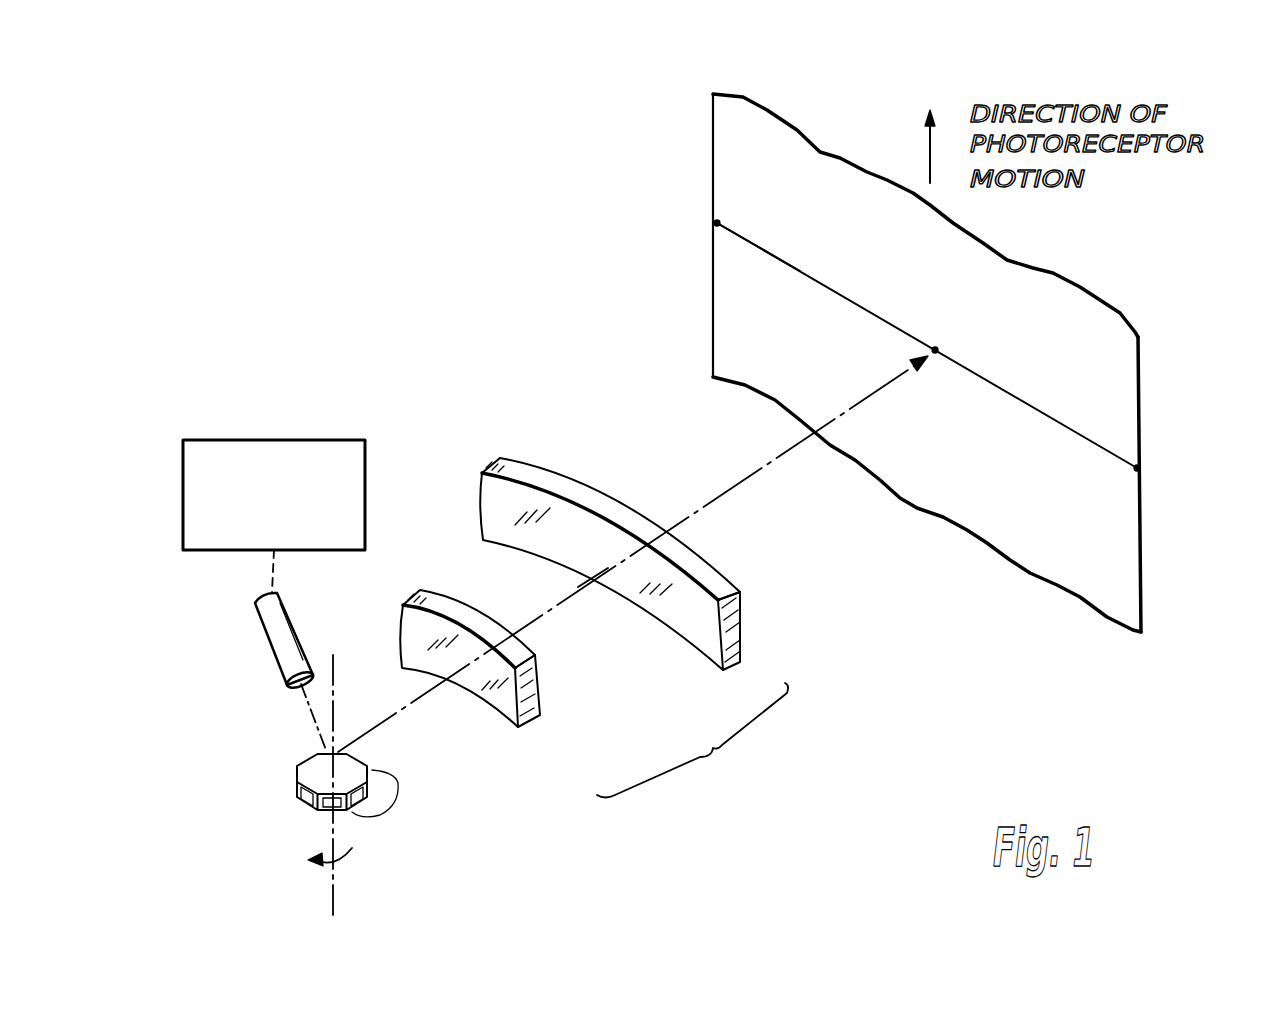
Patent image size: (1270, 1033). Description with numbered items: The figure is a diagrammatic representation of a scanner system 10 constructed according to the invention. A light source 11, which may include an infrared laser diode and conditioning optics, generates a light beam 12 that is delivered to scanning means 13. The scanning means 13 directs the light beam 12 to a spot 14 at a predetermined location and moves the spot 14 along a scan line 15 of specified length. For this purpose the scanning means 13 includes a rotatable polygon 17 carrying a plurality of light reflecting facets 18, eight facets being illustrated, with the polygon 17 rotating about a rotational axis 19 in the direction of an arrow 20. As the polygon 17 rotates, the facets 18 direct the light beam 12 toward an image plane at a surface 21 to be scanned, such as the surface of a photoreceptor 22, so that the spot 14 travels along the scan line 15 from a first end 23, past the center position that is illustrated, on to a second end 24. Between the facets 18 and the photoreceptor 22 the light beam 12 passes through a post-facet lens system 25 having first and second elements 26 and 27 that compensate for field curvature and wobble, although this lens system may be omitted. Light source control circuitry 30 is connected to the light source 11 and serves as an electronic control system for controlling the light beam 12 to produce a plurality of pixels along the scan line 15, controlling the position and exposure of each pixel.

The scanner system 10 is at (333, 208).
The light source 11 is at (292, 610).
The light beam 12 is at (767, 463).
The scanning means 13 is at (338, 779).
The spot 14 is at (904, 351).
The scan line 15 is at (796, 278).
The polygon 17 is at (308, 762).
The light reflecting facets 18 is at (400, 777).
The rotational axis 19 is at (330, 885).
The arrow 20 is at (352, 848).
The surface 21 is at (765, 260).
The photoreceptor 22 is at (1142, 371).
The first end 23 is at (713, 224).
The second end 24 is at (1134, 472).
The post-facet lens system 25 is at (692, 740).
The first element 26 is at (527, 692).
The second element 27 is at (745, 623).
The light source control circuitry 30 is at (290, 440).